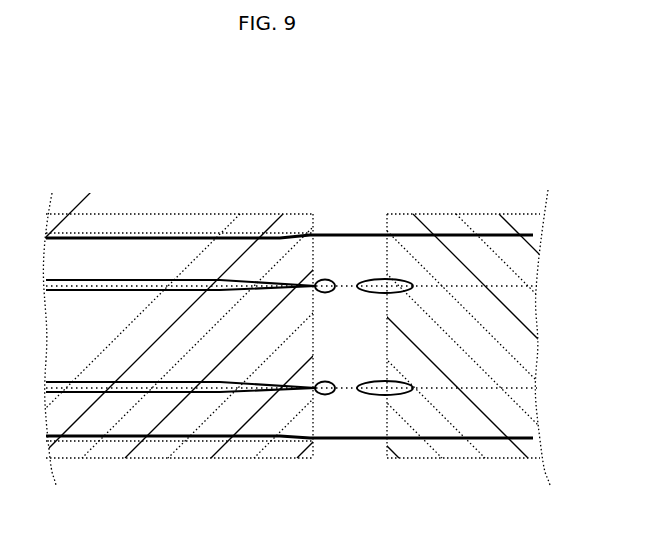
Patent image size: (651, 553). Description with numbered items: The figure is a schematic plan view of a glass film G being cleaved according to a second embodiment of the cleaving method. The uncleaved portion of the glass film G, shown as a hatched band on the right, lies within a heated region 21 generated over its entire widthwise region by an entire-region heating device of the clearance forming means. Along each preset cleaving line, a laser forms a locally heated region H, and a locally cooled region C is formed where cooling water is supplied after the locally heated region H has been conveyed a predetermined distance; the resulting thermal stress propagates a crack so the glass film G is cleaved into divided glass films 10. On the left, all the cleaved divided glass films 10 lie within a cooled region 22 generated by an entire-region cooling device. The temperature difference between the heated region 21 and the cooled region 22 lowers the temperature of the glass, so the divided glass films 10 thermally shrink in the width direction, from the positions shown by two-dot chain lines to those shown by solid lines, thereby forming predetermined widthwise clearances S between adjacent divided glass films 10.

The divided glass film 10 is at (133, 213).
The heated region 21 is at (473, 214).
The cooled region 22 is at (226, 214).
The locally cooled region C is at (328, 279).
The locally heated region H is at (378, 278).
The widthwise clearance S is at (192, 312).
The glass film G is at (503, 328).